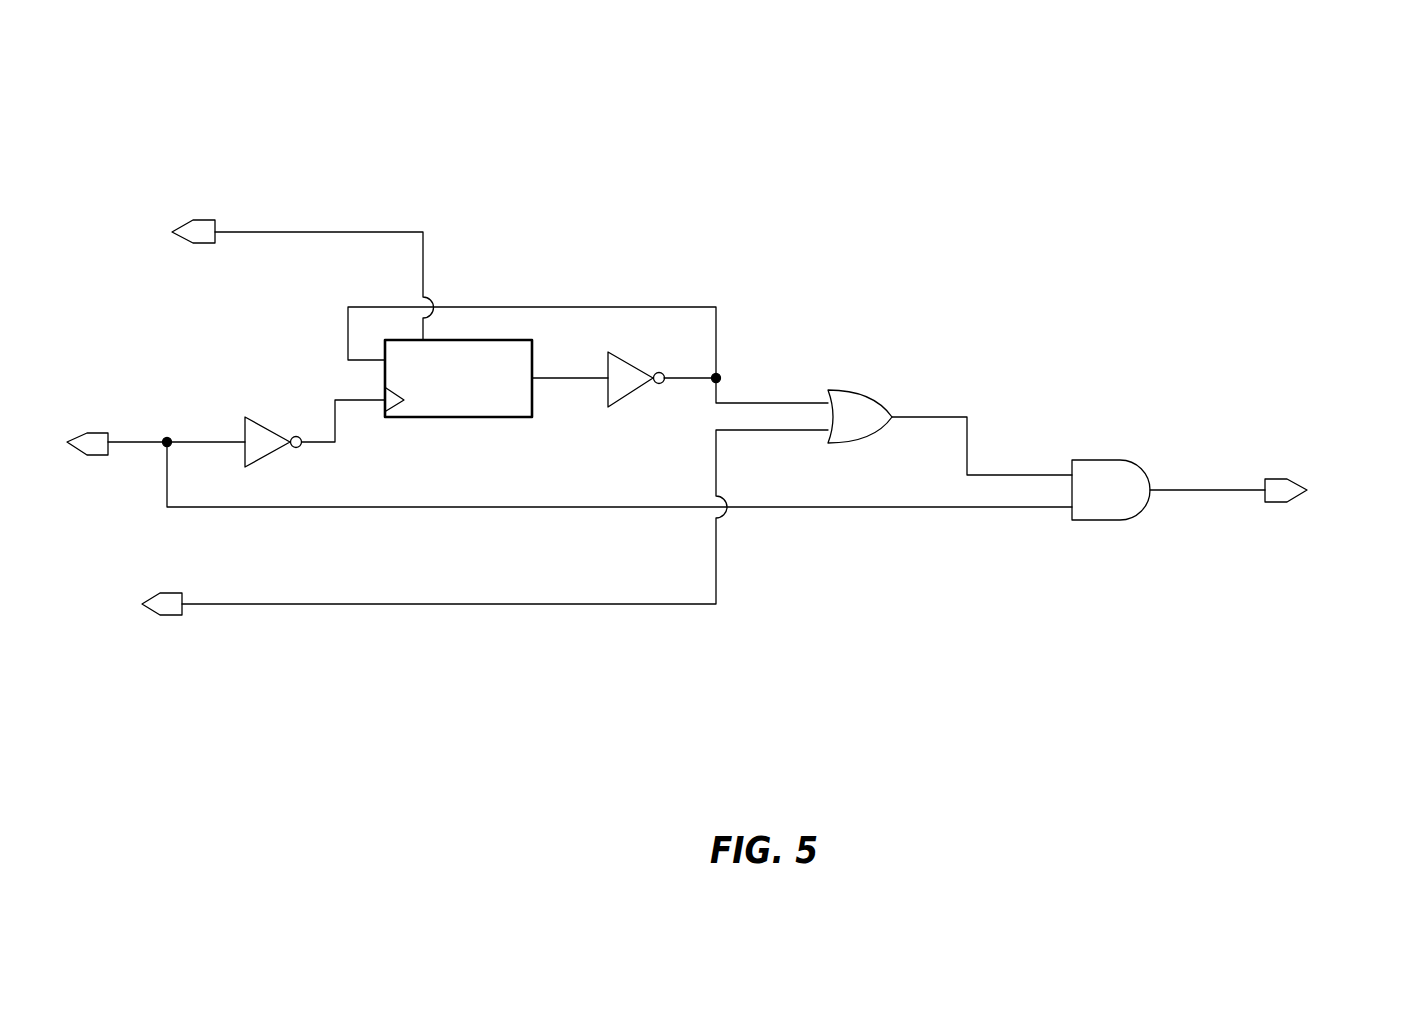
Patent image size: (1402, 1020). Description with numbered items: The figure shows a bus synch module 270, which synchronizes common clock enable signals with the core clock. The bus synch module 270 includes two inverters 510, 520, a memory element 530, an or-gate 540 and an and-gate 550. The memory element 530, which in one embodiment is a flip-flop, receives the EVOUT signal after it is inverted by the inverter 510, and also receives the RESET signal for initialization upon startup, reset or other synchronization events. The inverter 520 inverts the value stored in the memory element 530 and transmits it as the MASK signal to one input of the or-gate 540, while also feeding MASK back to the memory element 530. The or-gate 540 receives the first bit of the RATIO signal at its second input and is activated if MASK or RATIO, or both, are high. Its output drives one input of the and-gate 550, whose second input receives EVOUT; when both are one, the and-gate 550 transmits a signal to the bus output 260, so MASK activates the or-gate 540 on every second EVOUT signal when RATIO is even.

The bus synch module 270 is at (455, 94).
The inverter 510 is at (270, 419).
The inverter 520 is at (630, 393).
The memory element 530 is at (483, 392).
The or-gate 540 is at (874, 390).
The and-gate 550 is at (1096, 521).
The bus output 260 is at (1330, 496).